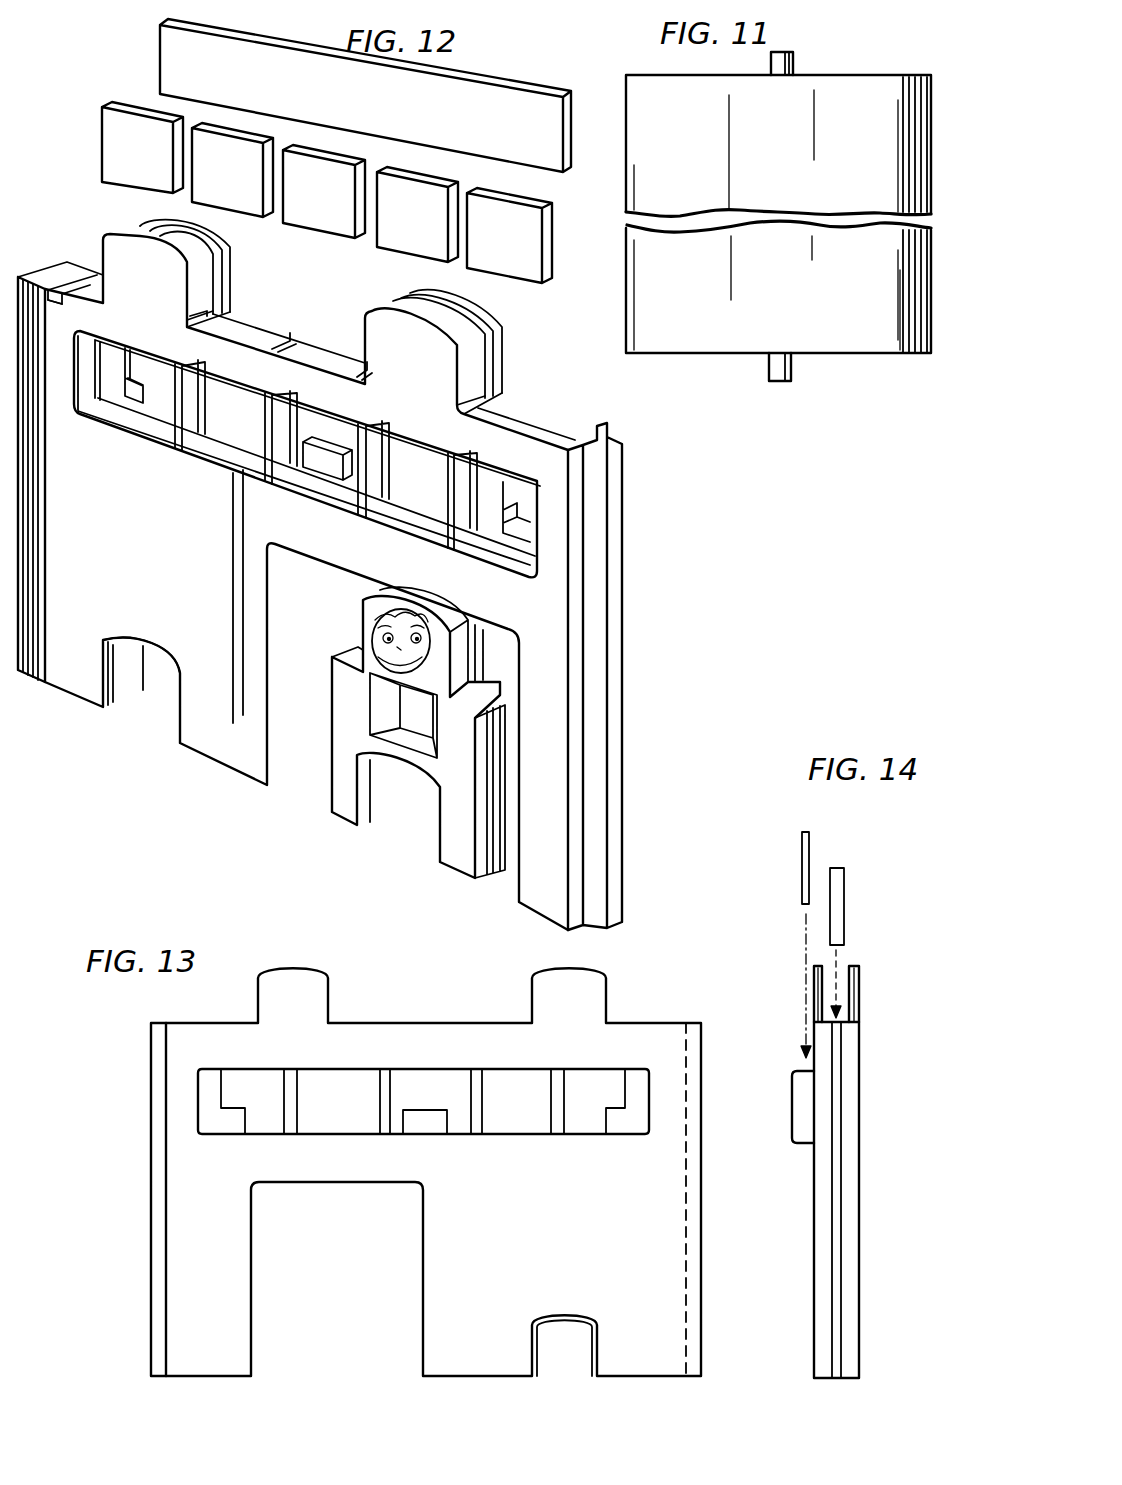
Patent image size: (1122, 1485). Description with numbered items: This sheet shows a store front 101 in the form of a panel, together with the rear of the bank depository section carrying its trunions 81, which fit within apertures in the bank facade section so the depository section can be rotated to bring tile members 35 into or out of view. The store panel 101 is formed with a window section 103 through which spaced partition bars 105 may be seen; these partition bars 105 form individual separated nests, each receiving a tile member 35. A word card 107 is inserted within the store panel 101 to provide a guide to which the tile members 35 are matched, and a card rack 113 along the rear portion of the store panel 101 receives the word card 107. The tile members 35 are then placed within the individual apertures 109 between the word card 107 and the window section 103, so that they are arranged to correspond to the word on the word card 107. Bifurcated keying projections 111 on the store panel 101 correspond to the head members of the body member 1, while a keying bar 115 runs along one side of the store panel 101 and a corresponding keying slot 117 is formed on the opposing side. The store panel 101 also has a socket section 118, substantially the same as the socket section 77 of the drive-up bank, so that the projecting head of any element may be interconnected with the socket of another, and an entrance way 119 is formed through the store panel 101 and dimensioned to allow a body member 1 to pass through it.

In FIG. 12, the body member 1 is at (445, 872).
In FIG. 12, the tile member 35 is at (118, 103).
In FIG. 14, the tile member 35 is at (847, 896).
In FIG. 13, the socket section 77 is at (570, 1365).
In FIG. 11, the trunion 81 is at (793, 65).
In FIG. 12, the store panel 101 is at (655, 600).
In FIG. 13, the store panel 101 is at (140, 1278).
In FIG. 14, the store panel 101 is at (866, 1284).
In FIG. 12, the window section 103 is at (318, 418).
In FIG. 13, the window section 103 is at (423, 1101).
In FIG. 12, the partition bar 105 is at (205, 398).
In FIG. 13, the partition bar 105 is at (474, 1085).
In FIG. 12, the word card 107 is at (547, 110).
In FIG. 14, the word card 107 is at (800, 888).
In FIG. 12, the aperture 109 is at (250, 332).
In FIG. 12, the bifurcated keying projection 111 is at (118, 248).
In FIG. 13, the bifurcated keying projection 111 is at (313, 991).
In FIG. 14, the bifurcated keying projection 111 is at (862, 988).
In FIG. 12, the card rack 113 is at (528, 527).
In FIG. 13, the card rack 113 is at (620, 1130).
In FIG. 14, the card rack 113 is at (791, 1116).
In FIG. 12, the keying bar 115 is at (615, 478).
In FIG. 13, the keying bar 115 is at (150, 1178).
In FIG. 12, the keying slot 117 is at (52, 290).
In FIG. 13, the keying slot 117 is at (690, 1178).
In FIG. 12, the socket section 118 is at (152, 708).
In FIG. 12, the entrance way 119 is at (310, 785).
In FIG. 13, the entrance way 119 is at (303, 1283).